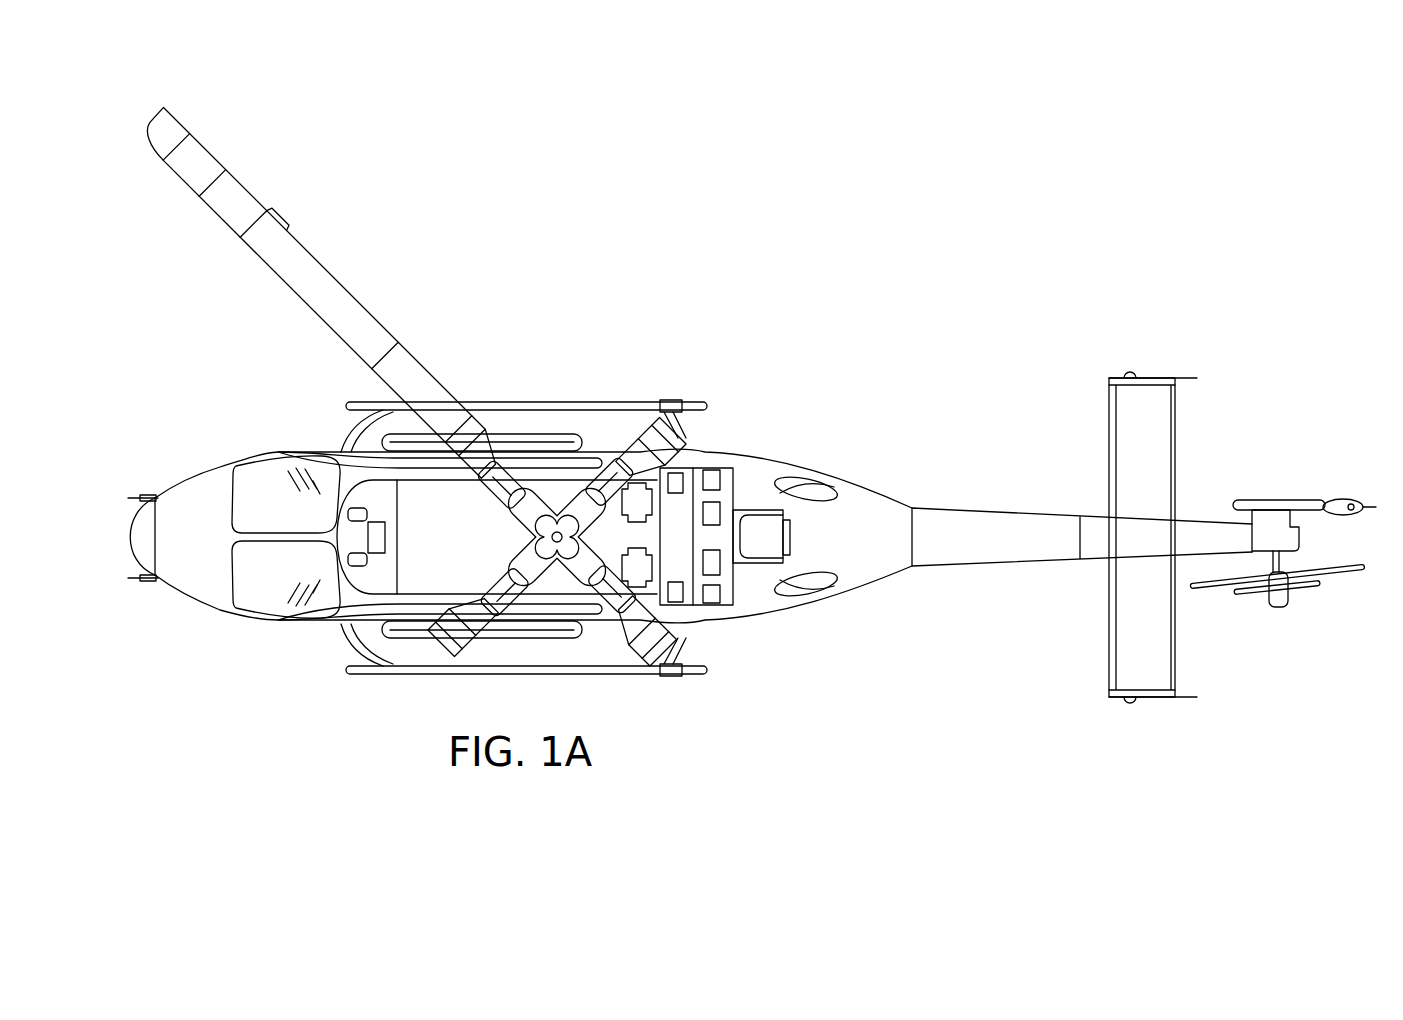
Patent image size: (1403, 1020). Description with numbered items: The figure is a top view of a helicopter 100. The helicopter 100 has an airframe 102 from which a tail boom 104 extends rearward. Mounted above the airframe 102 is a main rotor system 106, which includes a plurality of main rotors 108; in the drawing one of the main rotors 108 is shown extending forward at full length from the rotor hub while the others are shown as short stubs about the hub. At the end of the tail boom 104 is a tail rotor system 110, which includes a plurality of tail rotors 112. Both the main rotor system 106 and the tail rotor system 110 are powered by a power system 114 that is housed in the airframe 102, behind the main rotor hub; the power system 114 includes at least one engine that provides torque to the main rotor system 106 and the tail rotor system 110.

The helicopter 100 is at (994, 203).
The airframe 102 is at (757, 618).
The tail boom 104 is at (989, 567).
The main rotor system 106 is at (554, 490).
The main rotors 108 is at (362, 304).
The tail rotor system 110 is at (1283, 621).
The tail rotors 112 is at (1340, 577).
The power system 114 is at (707, 463).